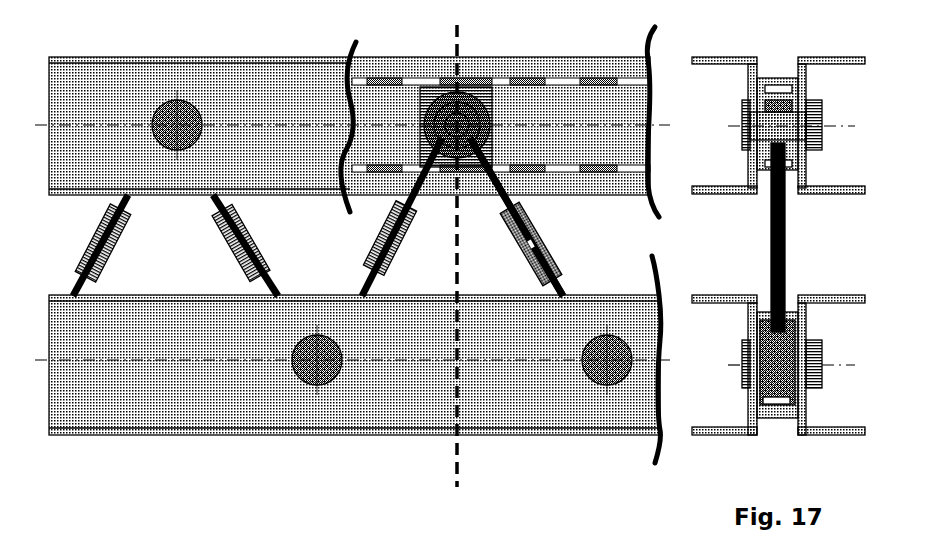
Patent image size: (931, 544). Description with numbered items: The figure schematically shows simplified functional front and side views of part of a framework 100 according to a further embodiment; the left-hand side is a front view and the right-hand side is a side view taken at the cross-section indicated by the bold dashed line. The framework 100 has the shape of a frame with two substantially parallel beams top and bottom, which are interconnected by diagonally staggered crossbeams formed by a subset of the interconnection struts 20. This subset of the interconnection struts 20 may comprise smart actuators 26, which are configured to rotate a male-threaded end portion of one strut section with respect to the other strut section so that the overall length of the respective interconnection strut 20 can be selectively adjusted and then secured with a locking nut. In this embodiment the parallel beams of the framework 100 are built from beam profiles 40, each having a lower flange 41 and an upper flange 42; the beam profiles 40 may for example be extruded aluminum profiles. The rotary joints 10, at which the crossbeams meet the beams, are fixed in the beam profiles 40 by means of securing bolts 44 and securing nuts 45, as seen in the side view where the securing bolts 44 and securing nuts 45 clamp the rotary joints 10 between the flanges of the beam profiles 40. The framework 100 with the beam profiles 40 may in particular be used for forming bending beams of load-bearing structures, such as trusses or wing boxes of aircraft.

The framework 100 is at (109, 39).
The beam profile 40 is at (313, 172).
The lower flange 41 is at (73, 195).
The upper flange 42 is at (257, 57).
The rotary joint 10 is at (175, 150).
The smart actuator 26 is at (108, 250).
The interconnection strut 20 is at (771, 219).
The securing bolt 44 is at (742, 144).
The securing nut 45 is at (822, 140).